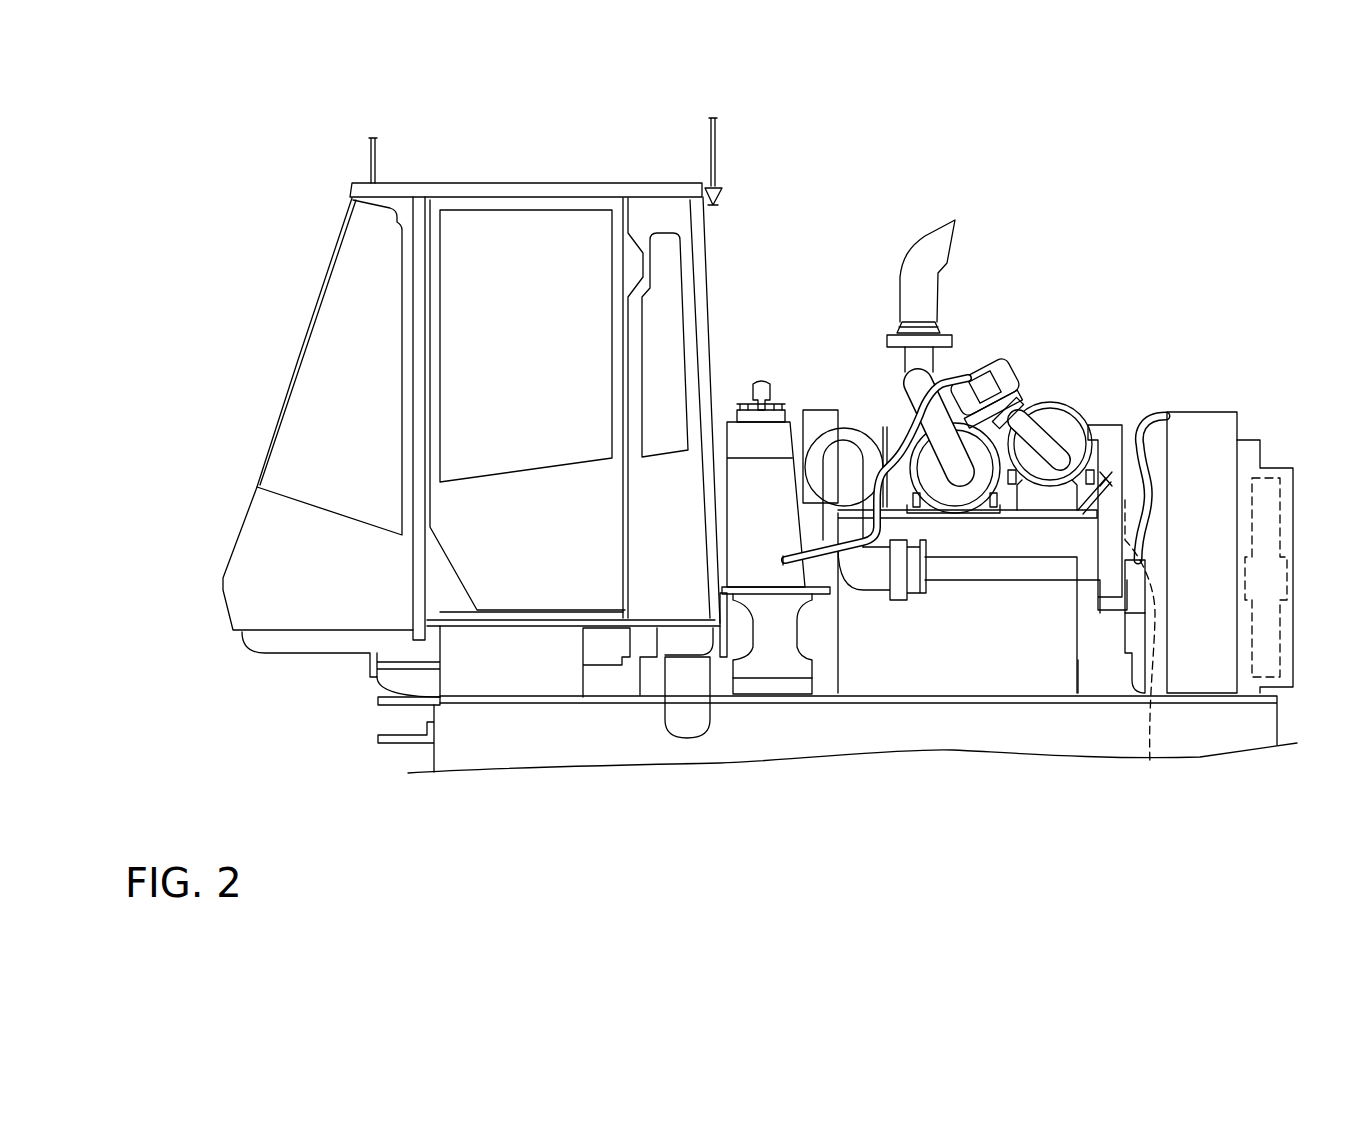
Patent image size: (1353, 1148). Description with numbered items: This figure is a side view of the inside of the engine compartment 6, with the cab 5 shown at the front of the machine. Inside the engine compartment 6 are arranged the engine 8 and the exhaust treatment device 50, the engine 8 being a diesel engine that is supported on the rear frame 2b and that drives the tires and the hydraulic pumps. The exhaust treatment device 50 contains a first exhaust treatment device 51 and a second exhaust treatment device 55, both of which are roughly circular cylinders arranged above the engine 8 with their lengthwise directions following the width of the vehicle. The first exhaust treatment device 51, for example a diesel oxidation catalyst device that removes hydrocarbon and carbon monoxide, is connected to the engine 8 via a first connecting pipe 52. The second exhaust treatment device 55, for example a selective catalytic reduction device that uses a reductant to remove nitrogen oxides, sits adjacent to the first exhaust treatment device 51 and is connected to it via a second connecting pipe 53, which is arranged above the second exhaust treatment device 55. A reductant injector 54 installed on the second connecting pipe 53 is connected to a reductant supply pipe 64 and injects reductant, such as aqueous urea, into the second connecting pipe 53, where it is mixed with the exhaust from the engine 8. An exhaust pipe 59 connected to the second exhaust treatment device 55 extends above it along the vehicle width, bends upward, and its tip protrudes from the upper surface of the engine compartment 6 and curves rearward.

The cab 5 is at (541, 183).
The rear frame 2b is at (552, 730).
The engine compartment 6 is at (1143, 362).
The engine 8 is at (1042, 635).
The exhaust treatment device 50 is at (1049, 353).
The first exhaust treatment device 51 is at (1060, 420).
The first connecting pipe 52 is at (1150, 765).
The second connecting pipe 53 is at (975, 400).
The reductant injector 54 is at (967, 395).
The second exhaust treatment device 55 is at (1040, 405).
The exhaust pipe 59 is at (928, 253).
The reductant supply pipe 64 is at (852, 425).